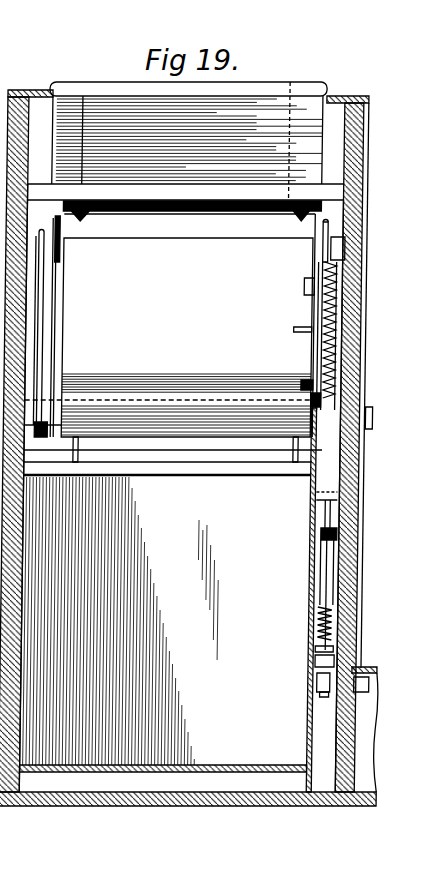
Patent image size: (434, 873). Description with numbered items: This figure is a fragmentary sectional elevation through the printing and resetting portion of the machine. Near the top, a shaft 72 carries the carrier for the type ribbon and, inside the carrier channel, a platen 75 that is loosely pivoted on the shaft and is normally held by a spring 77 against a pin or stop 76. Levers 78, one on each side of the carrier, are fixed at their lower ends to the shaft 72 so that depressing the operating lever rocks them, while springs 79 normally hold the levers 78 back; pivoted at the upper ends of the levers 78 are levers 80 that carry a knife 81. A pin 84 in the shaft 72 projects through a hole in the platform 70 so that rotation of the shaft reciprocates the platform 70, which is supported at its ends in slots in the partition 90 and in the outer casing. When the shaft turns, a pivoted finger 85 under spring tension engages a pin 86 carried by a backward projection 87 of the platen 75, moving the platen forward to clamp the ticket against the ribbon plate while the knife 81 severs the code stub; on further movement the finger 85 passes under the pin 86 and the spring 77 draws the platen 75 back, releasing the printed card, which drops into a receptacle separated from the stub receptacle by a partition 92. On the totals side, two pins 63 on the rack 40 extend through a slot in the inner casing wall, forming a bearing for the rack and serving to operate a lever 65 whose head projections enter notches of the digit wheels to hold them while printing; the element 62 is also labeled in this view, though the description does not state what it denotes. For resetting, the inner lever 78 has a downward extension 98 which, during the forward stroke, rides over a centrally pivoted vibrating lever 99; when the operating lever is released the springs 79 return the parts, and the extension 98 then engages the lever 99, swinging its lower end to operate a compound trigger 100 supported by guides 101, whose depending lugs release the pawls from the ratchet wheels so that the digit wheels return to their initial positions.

The rack 40 is at (372, 684).
The casing wall 62 is at (335, 284).
The pins 63 is at (100, 218).
The lever 65 is at (317, 492).
The platform 70 is at (170, 468).
The shaft 72 is at (50, 405).
The platen 75 is at (174, 350).
The pin or stop 76 is at (292, 329).
The spring 77 is at (305, 400).
The levers 78 is at (44, 268).
The springs 79 is at (338, 366).
The levers 80 is at (58, 258).
The knife 81 is at (240, 212).
The pin 84 is at (80, 447).
The pivoted finger 85 is at (320, 338).
The pin 86 is at (316, 295).
The backward projection 87 is at (302, 285).
The partition 90 is at (322, 553).
The partition 92 is at (126, 621).
The downward extension 98 is at (322, 535).
The vibrating lever 99 is at (330, 577).
The compound trigger 100 is at (318, 663).
The guides 101 is at (318, 652).